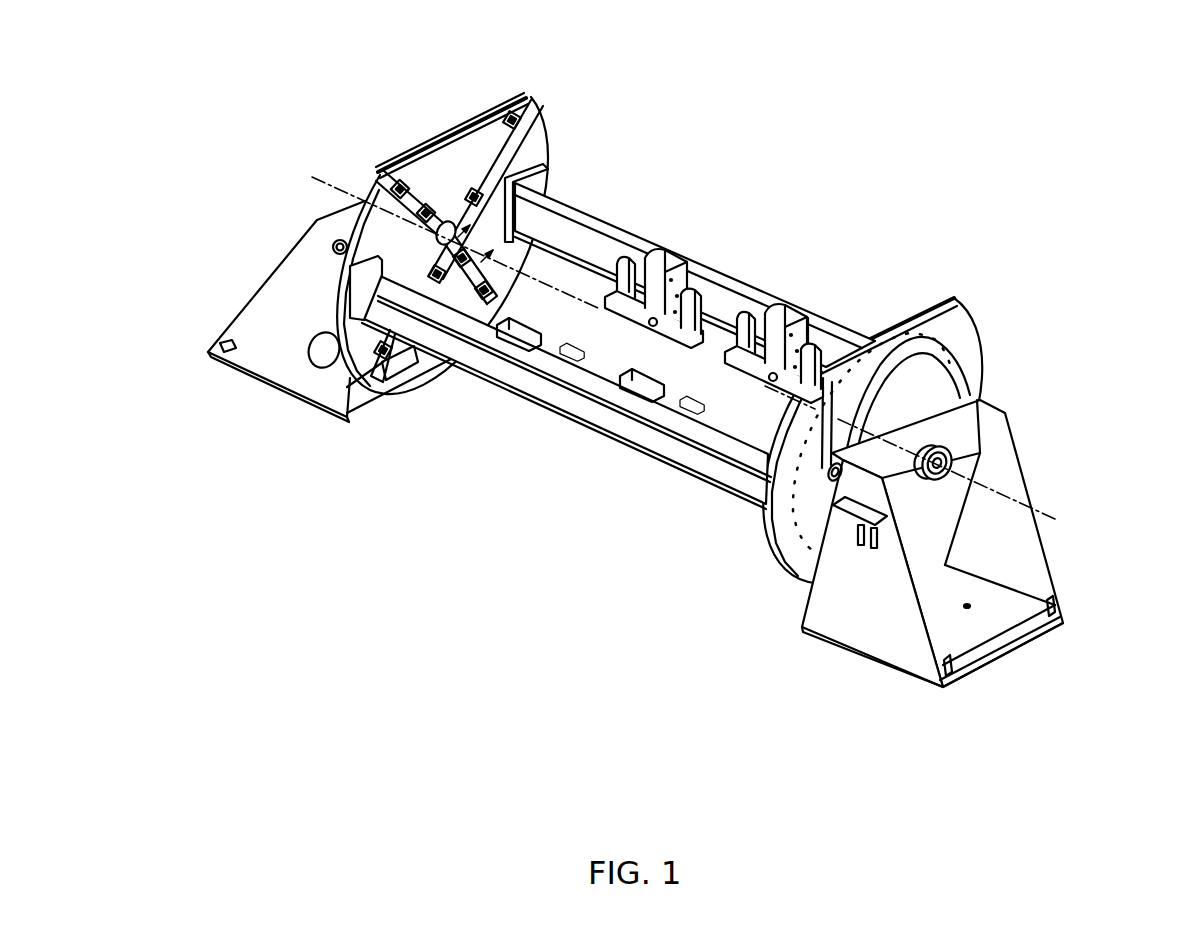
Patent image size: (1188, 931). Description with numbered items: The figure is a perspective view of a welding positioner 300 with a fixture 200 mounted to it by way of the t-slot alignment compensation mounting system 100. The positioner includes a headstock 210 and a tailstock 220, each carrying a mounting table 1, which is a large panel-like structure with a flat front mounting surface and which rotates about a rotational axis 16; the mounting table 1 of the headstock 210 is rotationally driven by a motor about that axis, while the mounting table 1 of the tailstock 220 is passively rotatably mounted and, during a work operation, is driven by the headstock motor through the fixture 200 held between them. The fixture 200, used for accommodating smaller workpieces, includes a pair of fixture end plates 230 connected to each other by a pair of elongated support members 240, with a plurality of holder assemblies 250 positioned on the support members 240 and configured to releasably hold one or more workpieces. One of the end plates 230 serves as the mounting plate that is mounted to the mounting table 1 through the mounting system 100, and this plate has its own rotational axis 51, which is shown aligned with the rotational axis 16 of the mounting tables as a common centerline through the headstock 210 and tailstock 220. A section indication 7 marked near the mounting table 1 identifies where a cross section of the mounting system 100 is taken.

The mounting frame bar of tool 1 is at (447, 135).
The section line 7- 7 is at (483, 246).
The axis of rotation 16 is at (664, 317).
The axis of rotation 51 is at (664, 317).
The cross-shaped tool 100 is at (454, 225).
The rotary fixture 200 is at (664, 446).
The left pedestal 210 is at (230, 202).
The right pedestal 220 is at (1155, 708).
The disc plate 230 is at (698, 340).
The beam 240 is at (612, 336).
The mount bracket 250 is at (556, 331).
The assembly 300 is at (664, 418).